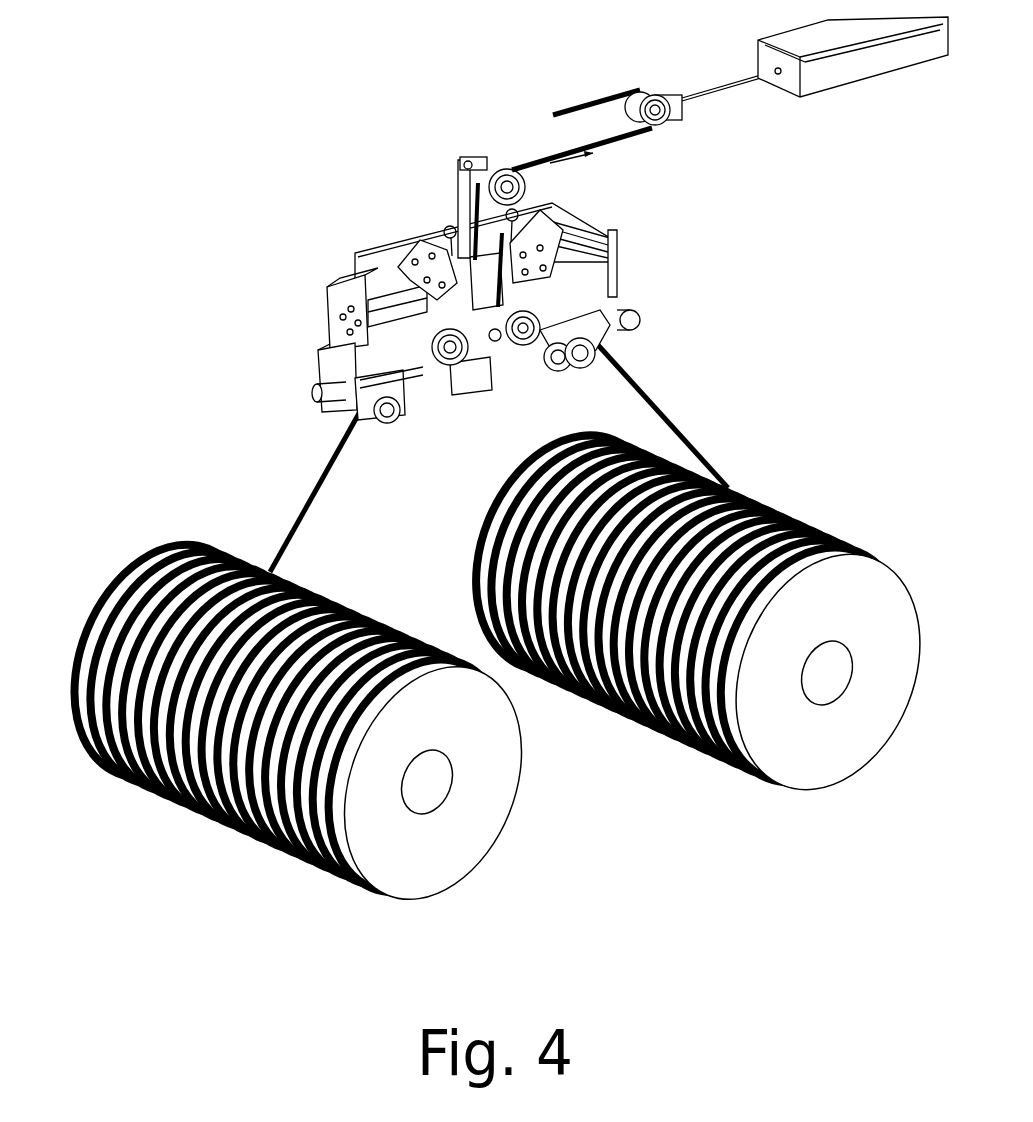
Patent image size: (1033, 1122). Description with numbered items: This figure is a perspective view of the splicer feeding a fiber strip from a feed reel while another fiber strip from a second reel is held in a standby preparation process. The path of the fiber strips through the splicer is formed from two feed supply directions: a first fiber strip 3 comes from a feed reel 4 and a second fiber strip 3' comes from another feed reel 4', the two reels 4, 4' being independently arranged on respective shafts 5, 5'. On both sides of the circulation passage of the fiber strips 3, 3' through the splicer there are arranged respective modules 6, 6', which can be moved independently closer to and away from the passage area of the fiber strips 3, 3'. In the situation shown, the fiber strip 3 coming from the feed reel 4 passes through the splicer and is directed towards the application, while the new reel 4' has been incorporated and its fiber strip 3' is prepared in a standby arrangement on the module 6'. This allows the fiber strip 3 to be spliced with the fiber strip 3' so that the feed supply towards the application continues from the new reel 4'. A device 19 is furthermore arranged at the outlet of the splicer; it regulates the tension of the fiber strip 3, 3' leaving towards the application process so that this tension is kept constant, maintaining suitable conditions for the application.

The fiber strip 3 is at (270, 490).
The fiber strip 3' is at (695, 416).
The feed reel 4 is at (298, 722).
The feed reel 4' is at (698, 613).
The shaft 5 is at (382, 875).
The shaft 5' is at (826, 753).
The module 6 is at (337, 265).
The module 6' is at (630, 251).
The device 19 is at (860, 64).